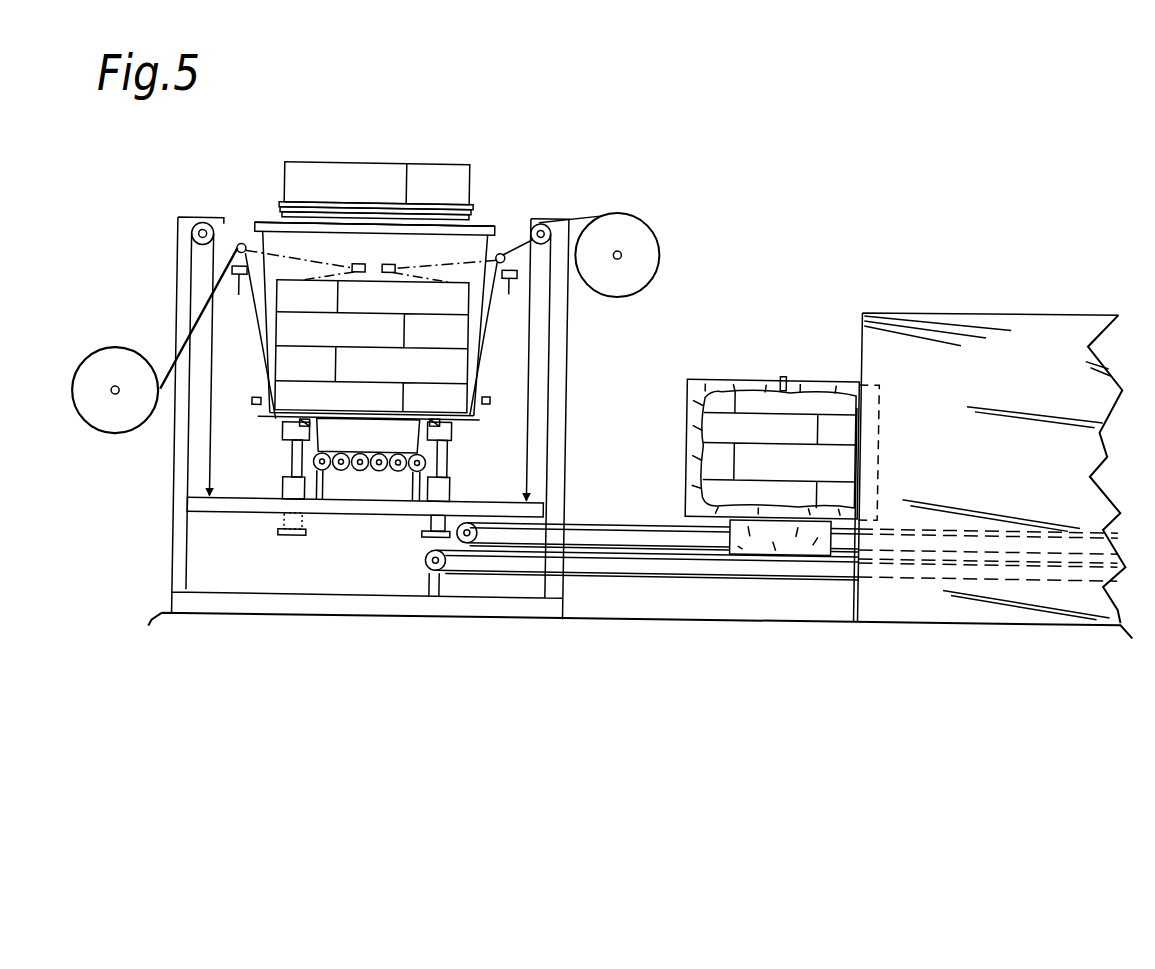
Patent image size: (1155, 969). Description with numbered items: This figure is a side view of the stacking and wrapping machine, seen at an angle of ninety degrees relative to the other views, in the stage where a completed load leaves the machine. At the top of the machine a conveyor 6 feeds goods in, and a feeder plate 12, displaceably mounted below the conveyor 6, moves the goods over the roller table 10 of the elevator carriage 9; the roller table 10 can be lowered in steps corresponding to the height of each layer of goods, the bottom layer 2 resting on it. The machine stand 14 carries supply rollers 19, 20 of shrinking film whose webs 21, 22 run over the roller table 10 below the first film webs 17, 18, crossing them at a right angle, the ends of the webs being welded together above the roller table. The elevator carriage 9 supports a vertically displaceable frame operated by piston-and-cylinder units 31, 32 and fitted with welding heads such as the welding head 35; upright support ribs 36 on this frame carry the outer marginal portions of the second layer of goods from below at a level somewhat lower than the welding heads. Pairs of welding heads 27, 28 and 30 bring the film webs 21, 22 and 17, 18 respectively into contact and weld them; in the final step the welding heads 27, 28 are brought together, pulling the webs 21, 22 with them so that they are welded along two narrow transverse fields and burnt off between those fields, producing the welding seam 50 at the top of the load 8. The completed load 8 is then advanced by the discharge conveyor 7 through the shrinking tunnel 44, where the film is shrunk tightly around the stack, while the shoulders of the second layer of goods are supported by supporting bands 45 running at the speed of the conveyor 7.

The layer of goods 2 is at (343, 183).
The conveyor 6 is at (464, 205).
The conveyor 7 is at (671, 549).
The load 8 is at (724, 372).
The elevator carriage 9 is at (245, 505).
The roller table 10 is at (381, 473).
The feeder plate 12 is at (460, 213).
The machine stand 14 is at (568, 381).
The film web 17 is at (267, 222).
The film web 18 is at (370, 186).
The supply roller 19 is at (104, 370).
The supply roller 20 is at (629, 227).
The film web 21 is at (199, 323).
The film web 22 is at (573, 216).
The welding head 27 is at (355, 264).
The welding head 28 is at (389, 264).
The welding head 30 is at (255, 224).
The piston-and-cylinder unit 31 is at (293, 453).
The piston-and-cylinder unit 32 is at (284, 488).
The welding head 35 is at (306, 420).
The support rib 36 is at (283, 430).
The shrinking tunnel 44 is at (926, 309).
The supporting band 45 is at (620, 520).
The welding seam 50 is at (784, 370).